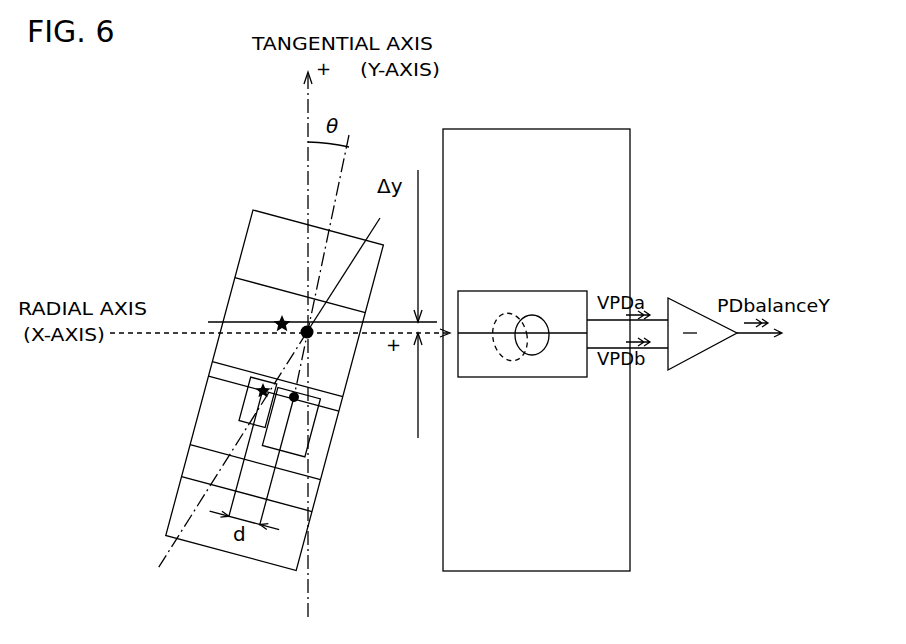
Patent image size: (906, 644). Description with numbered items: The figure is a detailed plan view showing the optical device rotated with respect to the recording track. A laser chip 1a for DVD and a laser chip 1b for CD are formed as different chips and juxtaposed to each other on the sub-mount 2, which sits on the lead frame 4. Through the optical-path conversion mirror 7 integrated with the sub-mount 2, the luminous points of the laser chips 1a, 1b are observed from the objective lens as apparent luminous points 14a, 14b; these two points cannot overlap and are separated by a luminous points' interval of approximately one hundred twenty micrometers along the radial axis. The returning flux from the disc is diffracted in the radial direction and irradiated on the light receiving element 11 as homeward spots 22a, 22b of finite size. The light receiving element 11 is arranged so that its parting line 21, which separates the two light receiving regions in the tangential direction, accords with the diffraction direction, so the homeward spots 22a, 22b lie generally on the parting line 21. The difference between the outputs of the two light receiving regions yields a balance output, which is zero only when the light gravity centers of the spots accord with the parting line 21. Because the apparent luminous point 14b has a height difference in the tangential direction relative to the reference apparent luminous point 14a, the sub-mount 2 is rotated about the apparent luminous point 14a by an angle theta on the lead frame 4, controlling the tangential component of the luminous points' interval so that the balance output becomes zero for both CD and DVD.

The laser chip (first semiconductor laser) 1a is at (300, 402).
The laser chip (second semiconductor laser) 1b is at (248, 392).
The sub-mount 2 is at (205, 552).
The lead frame 4 is at (598, 128).
The optical-path conversion mirror 7 is at (243, 292).
The light receiving element 11 is at (549, 290).
The apparent luminous point 14a is at (312, 337).
The apparent luminous point 14b is at (281, 321).
The parting line 21 is at (481, 334).
The homeward spot 22a is at (533, 356).
The homeward spot 22b is at (500, 318).